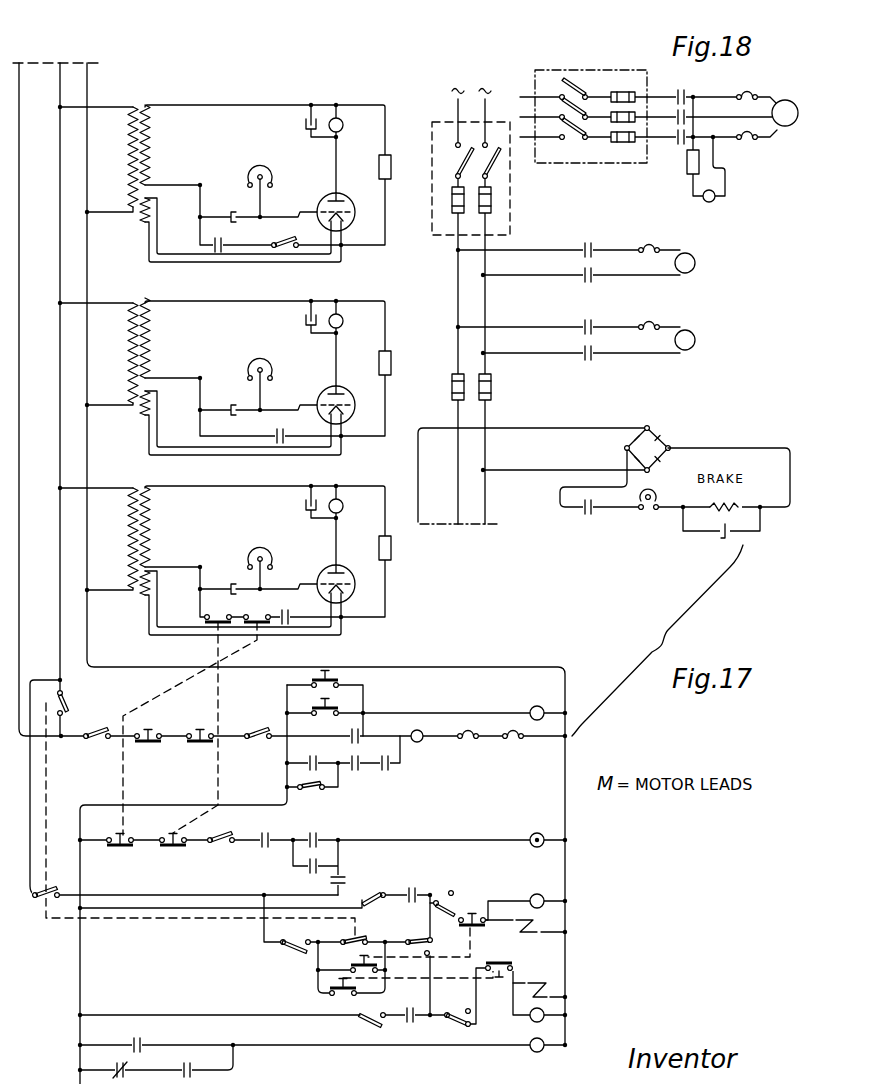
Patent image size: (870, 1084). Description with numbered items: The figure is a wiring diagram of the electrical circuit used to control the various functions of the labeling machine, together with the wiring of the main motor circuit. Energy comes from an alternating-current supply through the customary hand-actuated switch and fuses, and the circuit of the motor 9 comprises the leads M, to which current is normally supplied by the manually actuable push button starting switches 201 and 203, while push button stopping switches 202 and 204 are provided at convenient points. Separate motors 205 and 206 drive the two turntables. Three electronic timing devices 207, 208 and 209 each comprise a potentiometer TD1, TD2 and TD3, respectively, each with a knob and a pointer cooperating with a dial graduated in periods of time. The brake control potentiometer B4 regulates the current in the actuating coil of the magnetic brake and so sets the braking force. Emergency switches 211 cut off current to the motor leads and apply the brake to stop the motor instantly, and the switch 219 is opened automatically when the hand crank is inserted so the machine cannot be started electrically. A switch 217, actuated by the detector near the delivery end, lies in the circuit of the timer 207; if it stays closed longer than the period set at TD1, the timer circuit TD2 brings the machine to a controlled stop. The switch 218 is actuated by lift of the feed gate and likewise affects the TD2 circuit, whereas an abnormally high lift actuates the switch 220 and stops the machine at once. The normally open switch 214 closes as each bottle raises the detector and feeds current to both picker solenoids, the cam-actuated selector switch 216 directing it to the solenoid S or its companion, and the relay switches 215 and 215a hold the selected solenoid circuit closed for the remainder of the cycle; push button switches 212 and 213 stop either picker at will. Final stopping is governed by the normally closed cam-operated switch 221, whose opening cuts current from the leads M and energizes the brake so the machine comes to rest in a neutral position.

In FIG. 17, the electronic timing device 207 is at (131, 163).
In FIG. 17, the electronic timing device 208 is at (129, 356).
In FIG. 17, the electronic timing device 209 is at (125, 541).
In FIG. 17, the potentiometer TD1 is at (262, 163).
In FIG. 17, the potentiometer TD2 is at (268, 343).
In FIG. 17, the potentiometer TD3 is at (263, 546).
In FIG. 17, the switch 217 is at (280, 252).
In FIG. 17, the push button starting switch 203 is at (208, 630).
In FIG. 17, the push button stopping switch 204 is at (197, 712).
In FIG. 17, the motor leads M is at (339, 680).
In FIG. 18, the motor leads M is at (683, 106).
In FIG. 17, the push button starting switch 201 is at (338, 680).
In FIG. 17, the push button stopping switch 202 is at (348, 708).
In FIG. 17, the switch 220 is at (97, 730).
In FIG. 17, the emergency switches 211 is at (200, 725).
In FIG. 17, the switch 219 is at (255, 723).
In FIG. 17, the switch 221 is at (310, 792).
In FIG. 17, the switch 218 is at (221, 844).
In FIG. 17, the relay switch 215 is at (378, 891).
In FIG. 17, the push button switch 212 is at (475, 911).
In FIG. 17, the cam-actuated selector switch 216 is at (419, 933).
In FIG. 17, the normally open switch 214 is at (280, 947).
In FIG. 17, the push button switch 213 is at (501, 966).
In FIG. 17, the relay switch 215a is at (360, 1020).
In FIG. 17, the solenoid S is at (537, 894).
In FIG. 18, the motor 9 is at (789, 101).
In FIG. 18, the motor 205 is at (691, 254).
In FIG. 18, the motor 206 is at (692, 333).
In FIG. 18, the potentiometer B4 is at (643, 515).